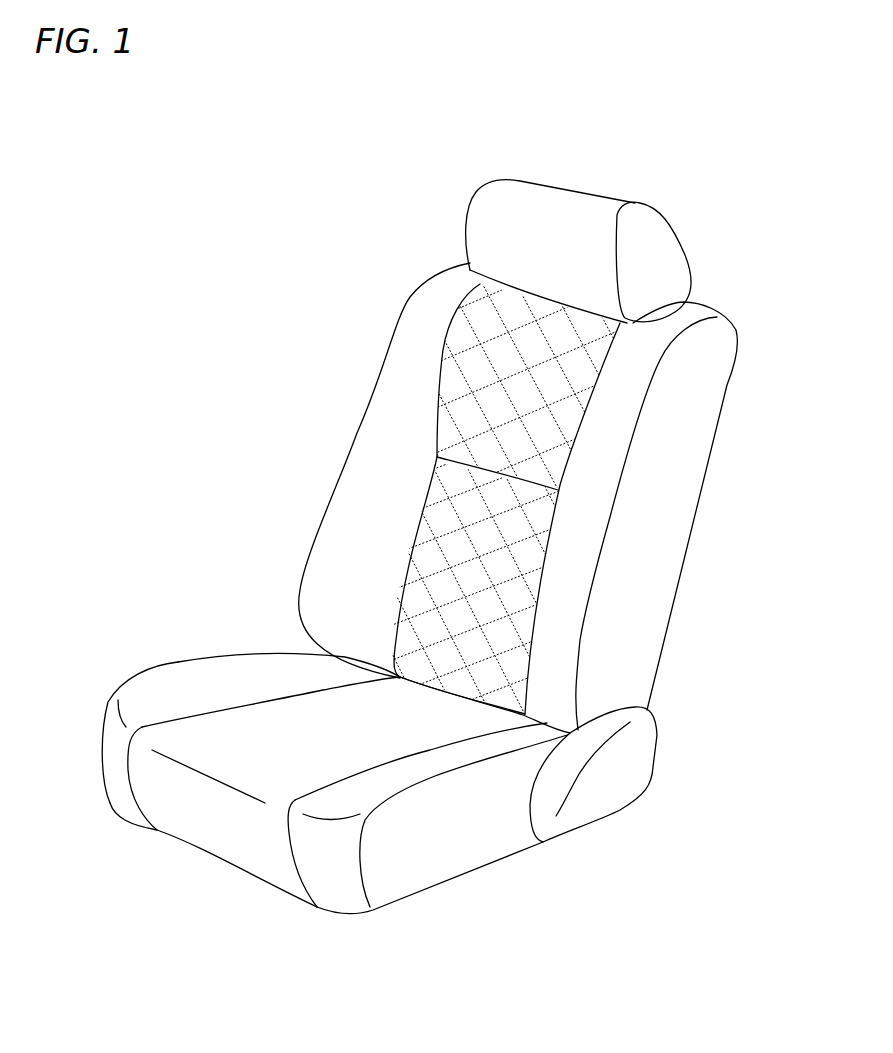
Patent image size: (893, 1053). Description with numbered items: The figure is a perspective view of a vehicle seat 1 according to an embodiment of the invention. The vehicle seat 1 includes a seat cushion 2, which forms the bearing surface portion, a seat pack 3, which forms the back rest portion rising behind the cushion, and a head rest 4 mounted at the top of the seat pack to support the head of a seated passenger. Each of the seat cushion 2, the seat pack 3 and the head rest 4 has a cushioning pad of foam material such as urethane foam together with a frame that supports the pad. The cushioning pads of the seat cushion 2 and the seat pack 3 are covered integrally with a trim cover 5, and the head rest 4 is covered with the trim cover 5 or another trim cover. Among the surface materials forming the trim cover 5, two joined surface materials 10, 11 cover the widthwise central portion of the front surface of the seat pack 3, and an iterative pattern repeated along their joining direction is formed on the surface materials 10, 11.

The vehicle seat 1 is at (229, 153).
The seat cushion 2 is at (180, 663).
The seat pack 3 is at (348, 462).
The head rest 4 is at (468, 213).
The trim cover 5 is at (446, 470).
The surface material 10 is at (570, 411).
The surface material 11 is at (522, 562).